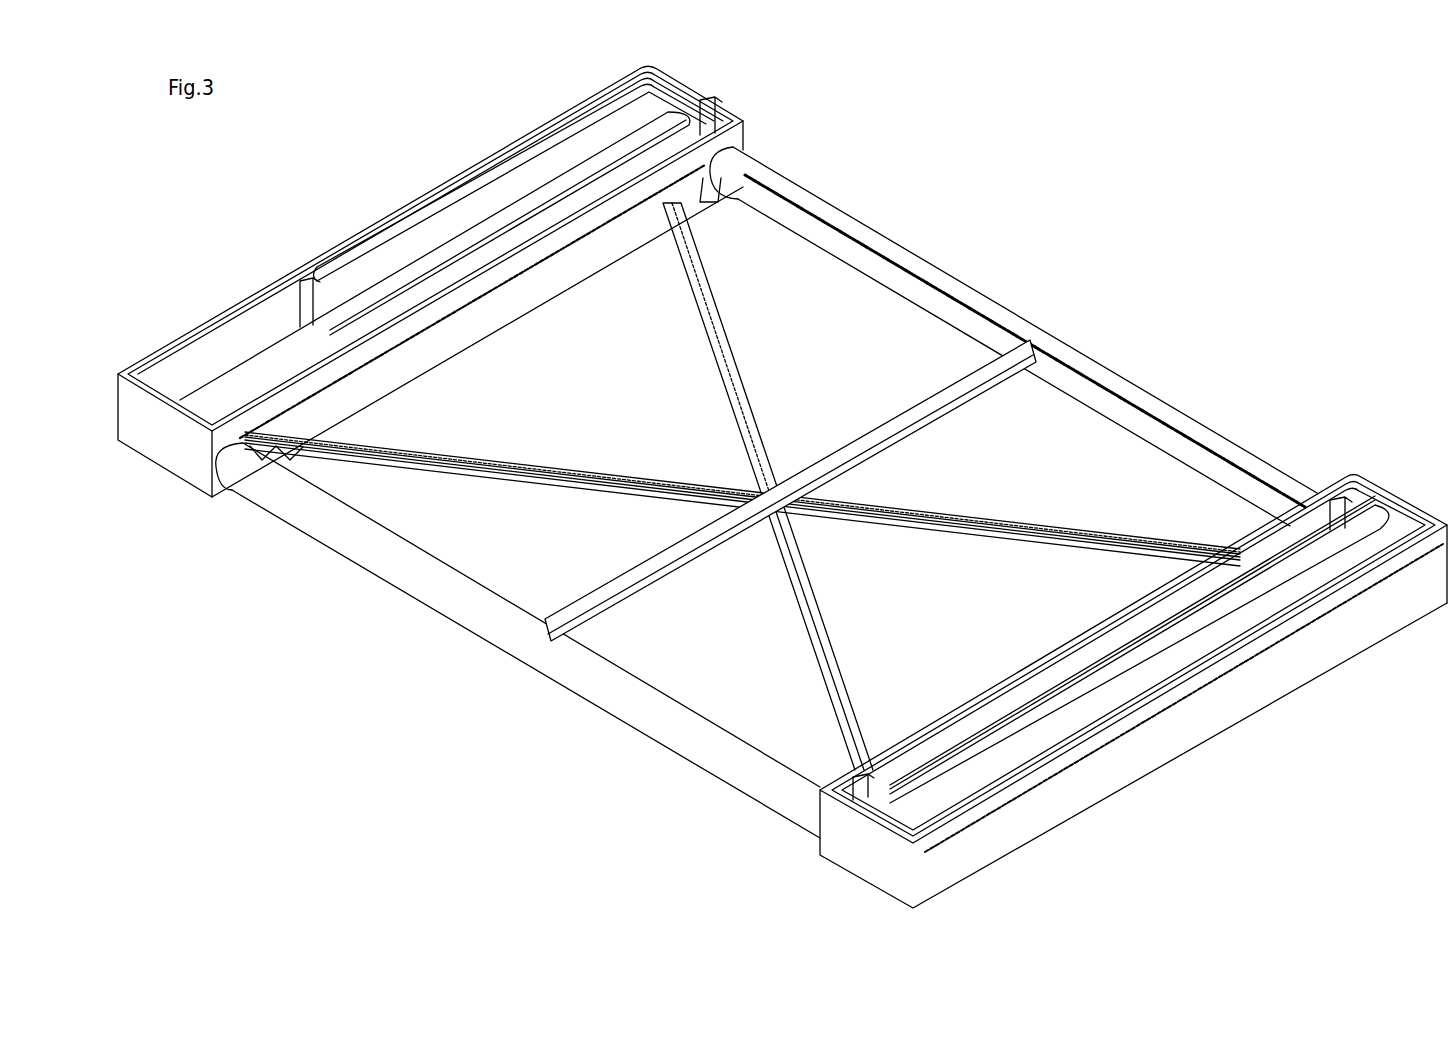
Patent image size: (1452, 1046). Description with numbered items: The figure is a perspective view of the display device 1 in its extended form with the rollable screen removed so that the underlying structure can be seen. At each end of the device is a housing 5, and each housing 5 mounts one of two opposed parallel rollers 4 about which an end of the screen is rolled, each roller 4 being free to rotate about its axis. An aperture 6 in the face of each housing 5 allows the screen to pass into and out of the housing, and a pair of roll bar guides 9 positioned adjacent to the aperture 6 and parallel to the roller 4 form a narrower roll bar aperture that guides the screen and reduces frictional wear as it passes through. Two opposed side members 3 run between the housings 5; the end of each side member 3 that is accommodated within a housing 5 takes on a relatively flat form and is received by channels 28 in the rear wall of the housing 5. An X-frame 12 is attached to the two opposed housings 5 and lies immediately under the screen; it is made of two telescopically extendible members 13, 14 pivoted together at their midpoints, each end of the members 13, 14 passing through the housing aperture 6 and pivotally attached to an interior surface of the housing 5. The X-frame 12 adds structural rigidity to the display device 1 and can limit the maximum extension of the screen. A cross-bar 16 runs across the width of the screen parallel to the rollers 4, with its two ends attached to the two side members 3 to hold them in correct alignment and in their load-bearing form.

The display device 1 is at (730, 787).
The side member 3 is at (880, 243).
The roller 4 is at (587, 185).
The housing 5 is at (740, 138).
The aperture 6 is at (333, 403).
The roll bar guide 9 is at (1310, 547).
The X-frame 12 is at (428, 467).
The telescopically extendible member 13 is at (550, 463).
The telescopically extendible member 14 is at (735, 392).
The cross-bar 16 is at (1017, 353).
The channel 28 is at (617, 93).